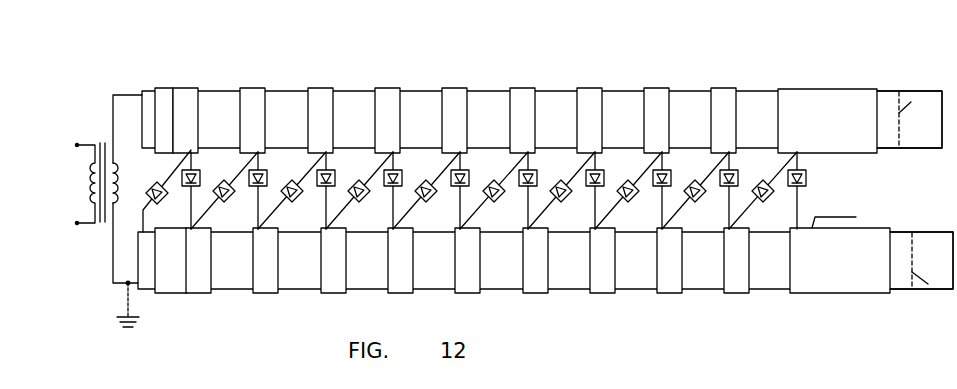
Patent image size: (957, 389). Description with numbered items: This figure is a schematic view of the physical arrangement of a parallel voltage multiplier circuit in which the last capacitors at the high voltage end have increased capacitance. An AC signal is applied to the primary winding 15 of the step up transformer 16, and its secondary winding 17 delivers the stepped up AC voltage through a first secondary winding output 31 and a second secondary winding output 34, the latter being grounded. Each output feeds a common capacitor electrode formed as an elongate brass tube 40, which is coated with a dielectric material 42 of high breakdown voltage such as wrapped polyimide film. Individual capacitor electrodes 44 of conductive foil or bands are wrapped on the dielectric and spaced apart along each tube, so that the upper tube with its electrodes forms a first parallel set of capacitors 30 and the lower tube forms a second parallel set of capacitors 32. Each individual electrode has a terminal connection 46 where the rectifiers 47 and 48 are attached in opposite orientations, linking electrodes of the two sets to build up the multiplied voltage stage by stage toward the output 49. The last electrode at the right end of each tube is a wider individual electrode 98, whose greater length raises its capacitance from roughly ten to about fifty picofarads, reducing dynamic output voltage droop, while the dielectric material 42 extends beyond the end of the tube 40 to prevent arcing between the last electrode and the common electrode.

The primary winding 15 is at (91, 188).
The step up transformer 16 is at (98, 135).
The secondary winding 17 is at (122, 181).
The parallel set of capacitors 30 is at (549, 83).
The secondary winding output 31 is at (124, 96).
The parallel set of capacitors 32 is at (579, 297).
The secondary winding output 34 is at (125, 287).
The brass tube 40 is at (914, 92).
The dielectric material 42 is at (890, 92).
The individual capacitor electrodes 44 is at (512, 90).
The terminal connection 46 is at (262, 155).
The rectifier 47 is at (356, 196).
The rectifier 48 is at (345, 168).
The output 49 is at (856, 217).
The wider individual electrode 98 is at (810, 92).